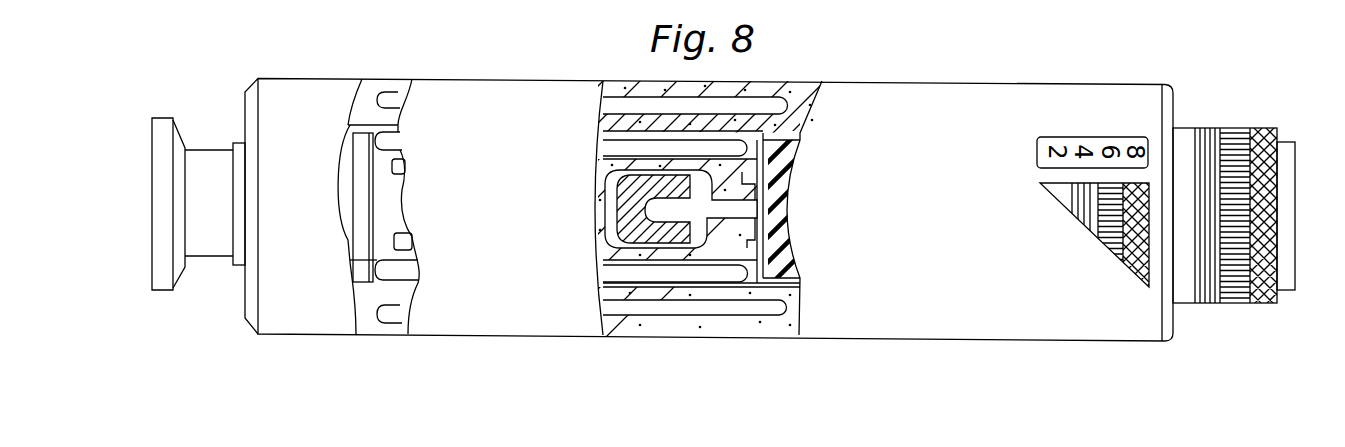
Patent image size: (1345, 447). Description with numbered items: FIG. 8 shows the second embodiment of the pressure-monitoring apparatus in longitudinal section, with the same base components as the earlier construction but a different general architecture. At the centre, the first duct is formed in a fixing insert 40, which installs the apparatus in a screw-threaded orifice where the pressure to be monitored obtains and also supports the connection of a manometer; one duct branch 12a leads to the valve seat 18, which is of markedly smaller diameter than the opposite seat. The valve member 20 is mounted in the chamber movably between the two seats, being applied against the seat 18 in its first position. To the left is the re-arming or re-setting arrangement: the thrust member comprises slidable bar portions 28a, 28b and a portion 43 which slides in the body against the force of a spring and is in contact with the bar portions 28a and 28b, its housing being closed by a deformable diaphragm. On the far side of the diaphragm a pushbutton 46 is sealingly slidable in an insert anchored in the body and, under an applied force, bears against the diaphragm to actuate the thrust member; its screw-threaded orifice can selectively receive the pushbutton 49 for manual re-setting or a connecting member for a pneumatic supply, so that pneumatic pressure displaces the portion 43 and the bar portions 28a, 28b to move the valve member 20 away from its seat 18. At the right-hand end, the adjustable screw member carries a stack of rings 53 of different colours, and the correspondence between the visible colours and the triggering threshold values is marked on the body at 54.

The pushbutton 49 is at (155, 266).
The pushbutton 46 is at (206, 247).
The portion of thrust member 43 is at (358, 242).
The bar portion 28a is at (388, 137).
The bar portion 28b is at (402, 278).
The fixing insert 40 is at (643, 232).
The duct branch 12a is at (690, 210).
The valve seat 18 is at (766, 228).
The valve member 20 is at (800, 150).
The stack of rings 53 is at (1212, 133).
The scale of triggering threshold values 54 is at (1052, 218).